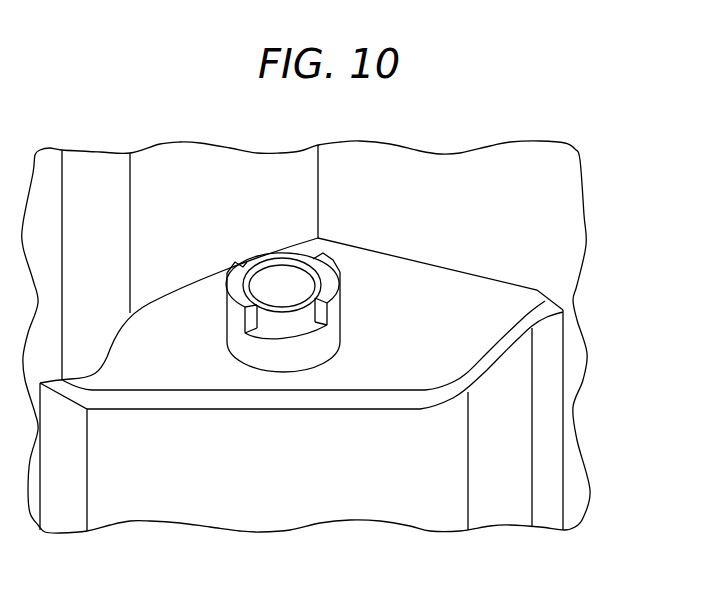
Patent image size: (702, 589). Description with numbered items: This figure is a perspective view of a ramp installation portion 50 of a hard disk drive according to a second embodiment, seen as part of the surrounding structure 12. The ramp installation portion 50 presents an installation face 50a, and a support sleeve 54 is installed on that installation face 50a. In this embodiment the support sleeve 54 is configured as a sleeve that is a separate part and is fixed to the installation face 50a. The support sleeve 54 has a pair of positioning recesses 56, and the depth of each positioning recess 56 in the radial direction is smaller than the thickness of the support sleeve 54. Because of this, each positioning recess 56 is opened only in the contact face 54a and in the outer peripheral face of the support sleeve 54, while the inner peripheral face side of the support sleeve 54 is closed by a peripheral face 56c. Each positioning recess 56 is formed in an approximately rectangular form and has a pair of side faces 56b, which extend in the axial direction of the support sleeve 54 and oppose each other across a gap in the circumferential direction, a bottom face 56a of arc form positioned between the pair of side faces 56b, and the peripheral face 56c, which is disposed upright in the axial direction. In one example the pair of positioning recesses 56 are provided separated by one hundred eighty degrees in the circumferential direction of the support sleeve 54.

The panel 12 is at (90, 171).
The ramp installation portion 50 is at (436, 513).
The installation face 50a is at (445, 288).
The support sleeve 54 is at (230, 320).
The contact face 54a is at (325, 274).
The positioning recess 56 is at (283, 254).
The bottom face 56a is at (297, 338).
The side faces 56b is at (245, 260).
The peripheral face 56c is at (330, 331).